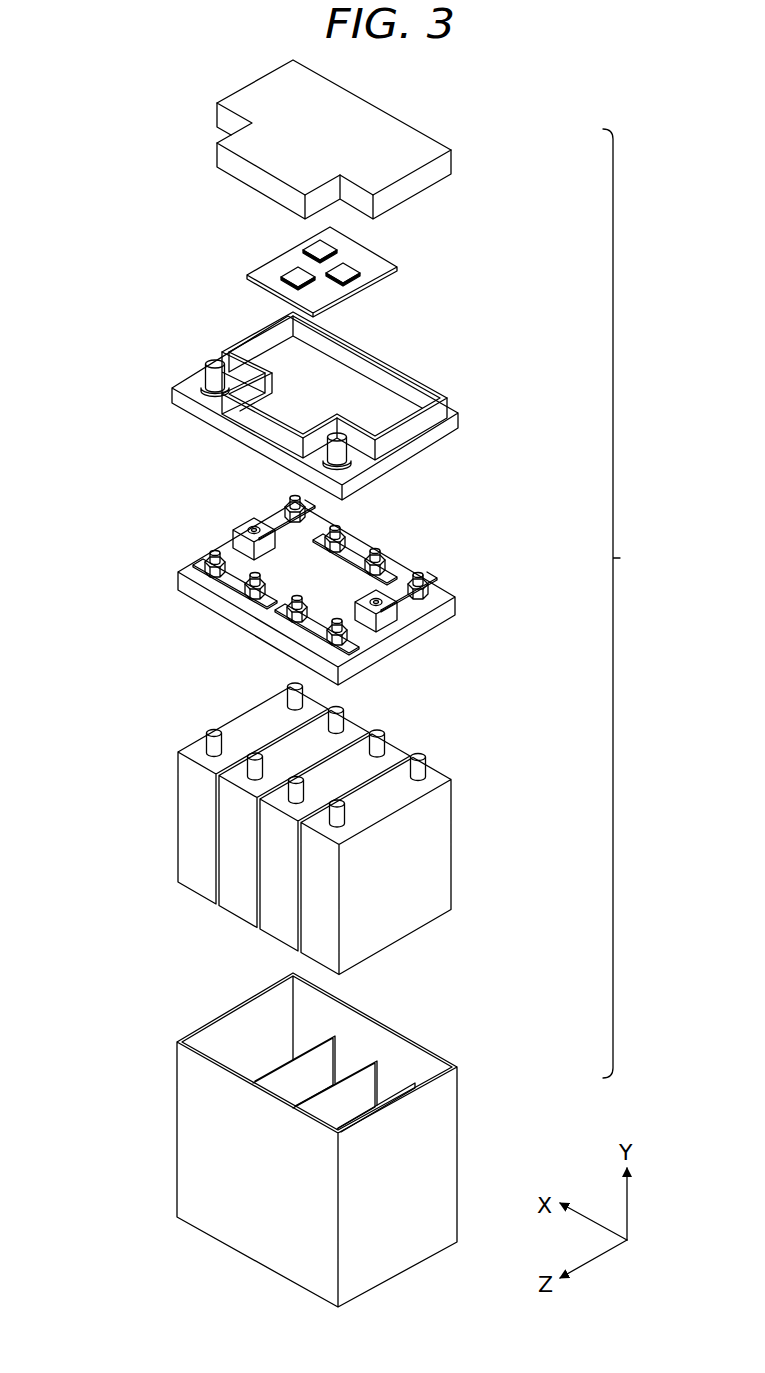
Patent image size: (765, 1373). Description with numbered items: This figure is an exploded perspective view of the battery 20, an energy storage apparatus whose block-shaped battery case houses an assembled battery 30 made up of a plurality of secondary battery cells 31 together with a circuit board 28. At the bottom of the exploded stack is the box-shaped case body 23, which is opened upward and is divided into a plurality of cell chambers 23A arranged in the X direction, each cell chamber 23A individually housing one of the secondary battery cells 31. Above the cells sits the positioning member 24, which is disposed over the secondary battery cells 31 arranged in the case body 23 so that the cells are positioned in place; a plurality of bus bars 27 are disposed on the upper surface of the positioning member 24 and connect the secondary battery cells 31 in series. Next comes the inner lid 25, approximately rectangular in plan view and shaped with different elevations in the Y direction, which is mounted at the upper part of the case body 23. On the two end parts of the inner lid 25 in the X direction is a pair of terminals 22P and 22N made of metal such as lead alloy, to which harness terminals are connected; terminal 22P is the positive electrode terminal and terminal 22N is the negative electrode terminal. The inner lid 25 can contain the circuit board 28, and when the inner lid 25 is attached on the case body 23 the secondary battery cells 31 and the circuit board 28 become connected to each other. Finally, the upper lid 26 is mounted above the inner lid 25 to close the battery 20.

The battery 20 is at (626, 603).
The positive electrode terminal 22P is at (214, 363).
The negative electrode terminal 22N is at (337, 437).
The case body 23 is at (346, 1140).
The cell chamber 23A is at (360, 1092).
The positioning member 24 is at (375, 589).
The inner lid 25 is at (380, 368).
The upper lid 26 is at (428, 159).
The bus bar 27 is at (360, 553).
The circuit board 28 is at (357, 262).
The assembled battery 30 is at (326, 828).
The secondary battery cell 31 is at (197, 820).